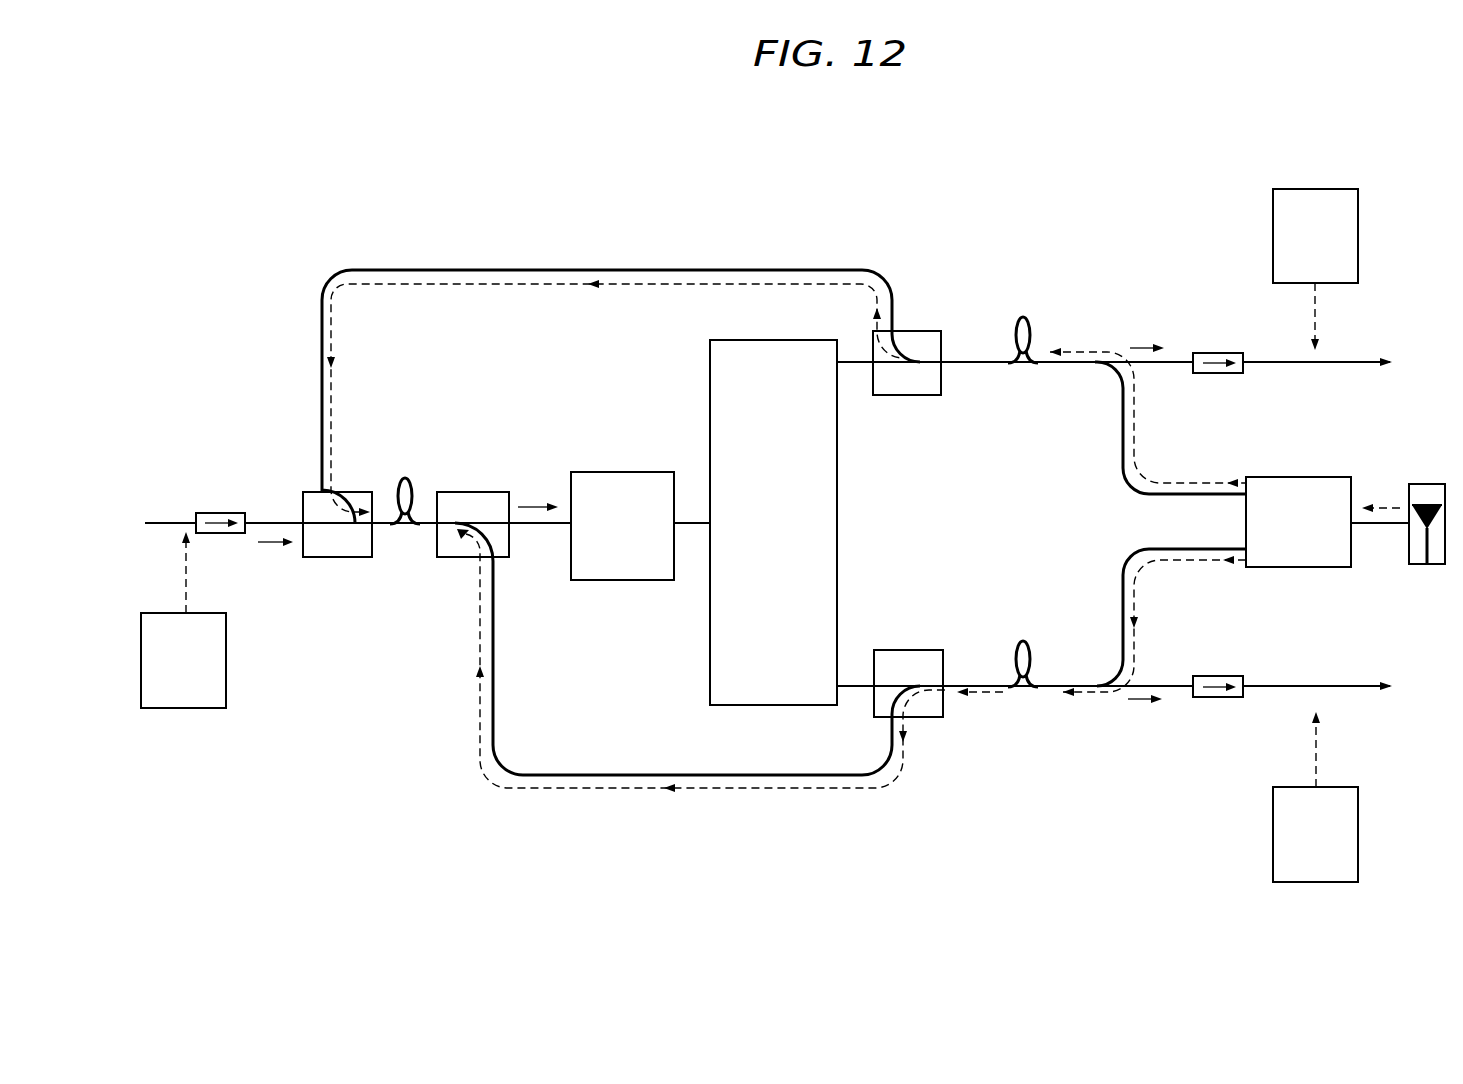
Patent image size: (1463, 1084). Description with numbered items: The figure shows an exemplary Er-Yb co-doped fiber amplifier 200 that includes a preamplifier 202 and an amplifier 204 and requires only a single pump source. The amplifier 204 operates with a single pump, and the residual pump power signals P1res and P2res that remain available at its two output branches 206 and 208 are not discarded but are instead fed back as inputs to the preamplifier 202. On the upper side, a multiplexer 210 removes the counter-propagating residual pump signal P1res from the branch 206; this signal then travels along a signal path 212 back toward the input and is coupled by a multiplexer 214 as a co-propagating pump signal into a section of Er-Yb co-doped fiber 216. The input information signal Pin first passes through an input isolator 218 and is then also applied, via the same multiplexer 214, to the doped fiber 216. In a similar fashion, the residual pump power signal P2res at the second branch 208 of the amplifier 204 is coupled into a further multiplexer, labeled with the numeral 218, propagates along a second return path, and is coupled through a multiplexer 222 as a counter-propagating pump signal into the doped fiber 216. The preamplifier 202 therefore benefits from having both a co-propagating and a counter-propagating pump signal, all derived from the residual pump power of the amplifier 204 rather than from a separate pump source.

The Er-Yb co-doped fiber amplifier 200 is at (856, 105).
The preamplifier 202 is at (313, 186).
The amplifier 204 is at (918, 191).
The branch 206 is at (1398, 339).
The second branch 208 is at (1398, 662).
The multiplexer 210 is at (941, 388).
The signal path 212 is at (585, 268).
The multiplexer 214 is at (323, 558).
The Er-Yb co-doped fiber 216 is at (405, 473).
The input isolator 218 is at (943, 650).
The multiplexer 222 is at (465, 490).